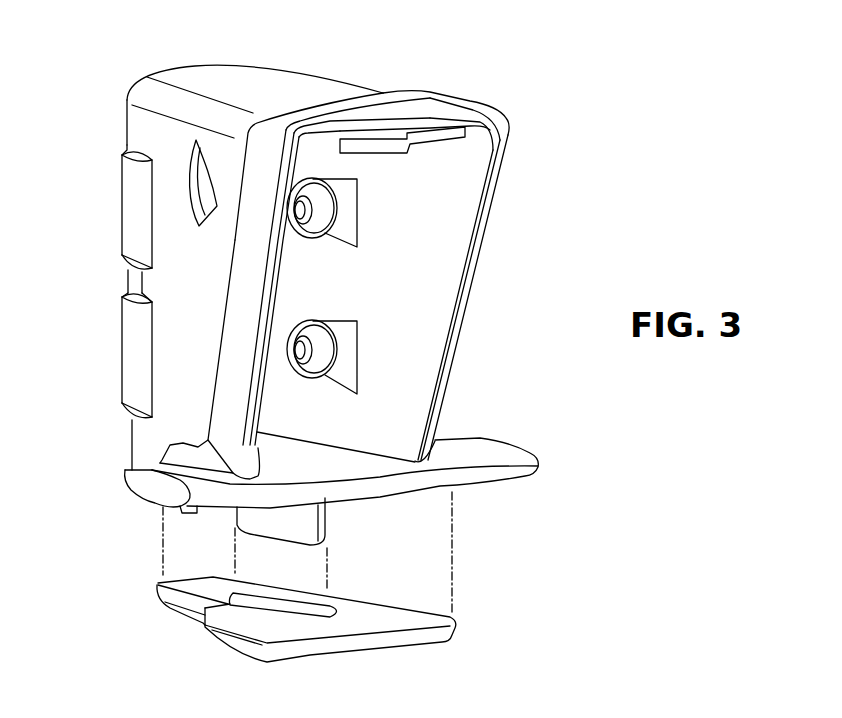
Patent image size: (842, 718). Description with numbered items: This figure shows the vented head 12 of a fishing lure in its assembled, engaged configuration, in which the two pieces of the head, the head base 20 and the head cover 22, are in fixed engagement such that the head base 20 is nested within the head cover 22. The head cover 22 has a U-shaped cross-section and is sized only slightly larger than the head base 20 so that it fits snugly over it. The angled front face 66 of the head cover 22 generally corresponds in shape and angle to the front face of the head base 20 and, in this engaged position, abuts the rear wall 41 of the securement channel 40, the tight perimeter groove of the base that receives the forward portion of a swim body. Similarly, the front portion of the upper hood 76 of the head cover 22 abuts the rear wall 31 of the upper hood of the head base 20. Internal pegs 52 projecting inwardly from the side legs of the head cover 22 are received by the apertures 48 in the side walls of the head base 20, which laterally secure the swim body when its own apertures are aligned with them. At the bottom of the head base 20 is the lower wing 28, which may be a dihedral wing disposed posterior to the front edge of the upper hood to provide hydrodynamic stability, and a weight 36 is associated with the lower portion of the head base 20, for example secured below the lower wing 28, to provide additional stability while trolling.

The vented head 12 is at (565, 205).
The head base 20 is at (460, 297).
The head cover 22 is at (277, 104).
The lower wing 28 is at (484, 458).
The rear wall of the upper hood 31 is at (382, 98).
The weight 36 is at (383, 612).
The securement channel 40 is at (232, 388).
The rear wall of the securement channel 41 is at (217, 353).
The apertures 48 is at (357, 252).
The internal pegs 52 is at (323, 208).
The angled front face of the head cover 66 is at (222, 300).
The upper hood of the head cover 76 is at (318, 106).